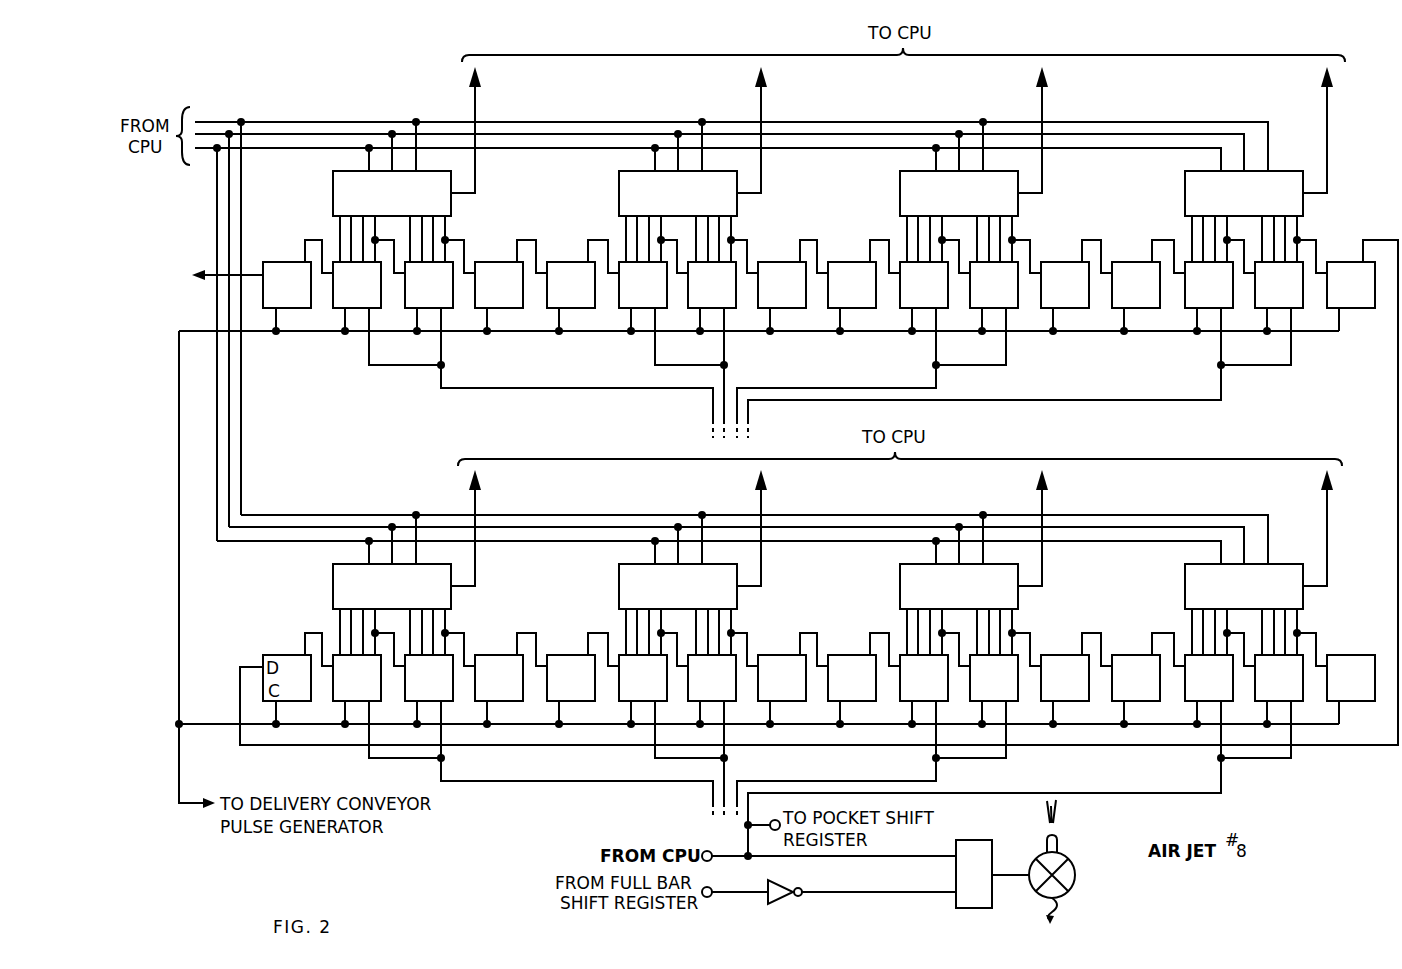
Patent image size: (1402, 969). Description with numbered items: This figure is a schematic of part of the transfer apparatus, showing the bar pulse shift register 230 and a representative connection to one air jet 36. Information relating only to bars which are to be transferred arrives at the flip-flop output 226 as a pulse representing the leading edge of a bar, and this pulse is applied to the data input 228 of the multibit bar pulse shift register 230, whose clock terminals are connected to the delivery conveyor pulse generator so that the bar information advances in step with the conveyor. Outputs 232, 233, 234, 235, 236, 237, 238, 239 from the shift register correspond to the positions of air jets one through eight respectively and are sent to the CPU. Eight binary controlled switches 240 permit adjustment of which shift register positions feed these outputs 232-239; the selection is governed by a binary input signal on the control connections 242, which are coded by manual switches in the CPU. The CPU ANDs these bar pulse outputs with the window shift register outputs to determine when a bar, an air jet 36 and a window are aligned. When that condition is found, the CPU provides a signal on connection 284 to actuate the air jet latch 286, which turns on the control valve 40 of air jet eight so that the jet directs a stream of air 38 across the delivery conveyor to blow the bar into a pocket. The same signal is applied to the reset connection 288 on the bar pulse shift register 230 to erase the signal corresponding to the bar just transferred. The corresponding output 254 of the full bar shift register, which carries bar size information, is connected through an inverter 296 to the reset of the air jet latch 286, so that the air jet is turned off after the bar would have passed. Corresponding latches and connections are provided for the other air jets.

The flip-flop output 226 is at (215, 277).
The data input 228 is at (263, 272).
The bar pulse shift register 230 is at (294, 318).
The shift register output 232 is at (478, 102).
The shift register output 233 is at (763, 102).
The shift register output 234 is at (1044, 102).
The shift register output 235 is at (1329, 108).
The shift register output 236 is at (478, 494).
The shift register output 237 is at (763, 497).
The shift register output 238 is at (1044, 497).
The shift register output 239 is at (1329, 504).
The binary controlled switch 240 is at (453, 207).
The control connections 242 is at (316, 147).
The full bar shift register output 254 is at (733, 894).
The CPU signal connection 284 is at (732, 858).
The air jet latch 286 is at (967, 838).
The reset connection 288 is at (1183, 797).
The inverter 296 is at (780, 901).
The air jet 36 is at (1080, 862).
The stream of air 38 is at (1060, 813).
The control valve 40 is at (1077, 878).